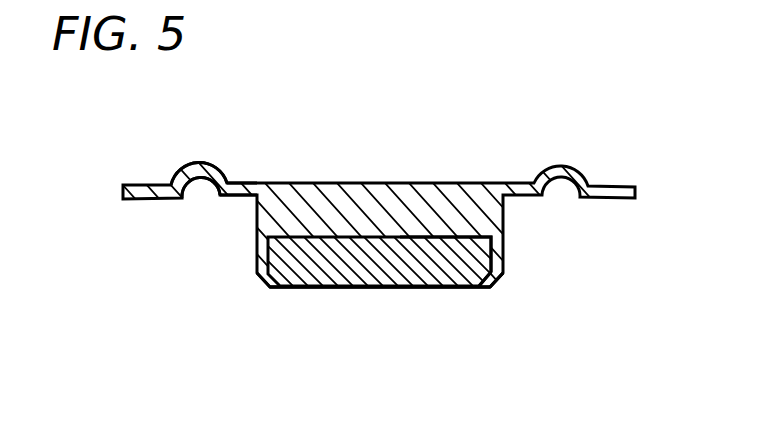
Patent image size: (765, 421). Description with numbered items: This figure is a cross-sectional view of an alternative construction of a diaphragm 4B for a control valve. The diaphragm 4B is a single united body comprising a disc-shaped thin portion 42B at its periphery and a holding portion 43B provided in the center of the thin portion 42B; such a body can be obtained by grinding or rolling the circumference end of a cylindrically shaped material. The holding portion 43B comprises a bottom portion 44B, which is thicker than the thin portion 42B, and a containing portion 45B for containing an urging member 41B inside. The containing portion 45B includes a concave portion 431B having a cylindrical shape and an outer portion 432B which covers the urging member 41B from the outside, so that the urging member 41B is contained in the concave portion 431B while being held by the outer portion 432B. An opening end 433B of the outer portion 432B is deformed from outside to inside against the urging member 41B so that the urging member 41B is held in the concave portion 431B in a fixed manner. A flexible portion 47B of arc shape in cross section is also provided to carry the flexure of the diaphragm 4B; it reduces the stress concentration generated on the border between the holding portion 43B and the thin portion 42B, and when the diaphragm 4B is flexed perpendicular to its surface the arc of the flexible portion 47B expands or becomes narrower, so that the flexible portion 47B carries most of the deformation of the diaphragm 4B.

The diaphragm 4B is at (618, 182).
The bottom portion 44B is at (393, 208).
The flexible portion 47B is at (201, 163).
The thin portion 42B is at (232, 196).
The urging member 41B is at (288, 288).
The holding portion 43B is at (330, 300).
The containing portion 45B is at (377, 263).
The concave portion 431B is at (438, 245).
The outer portion 432B is at (501, 277).
The opening end 433B is at (490, 286).